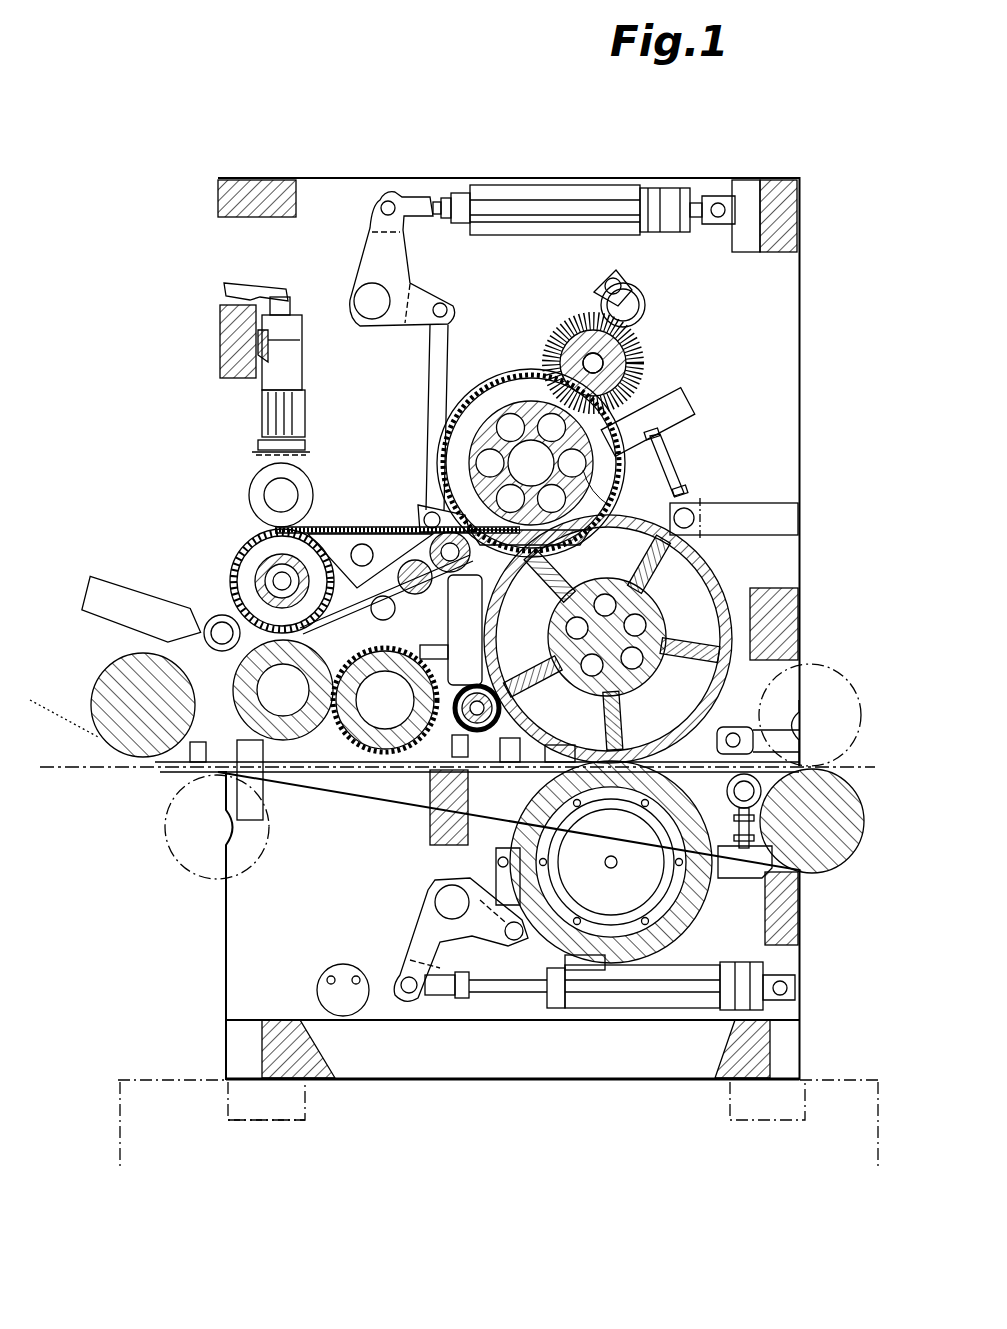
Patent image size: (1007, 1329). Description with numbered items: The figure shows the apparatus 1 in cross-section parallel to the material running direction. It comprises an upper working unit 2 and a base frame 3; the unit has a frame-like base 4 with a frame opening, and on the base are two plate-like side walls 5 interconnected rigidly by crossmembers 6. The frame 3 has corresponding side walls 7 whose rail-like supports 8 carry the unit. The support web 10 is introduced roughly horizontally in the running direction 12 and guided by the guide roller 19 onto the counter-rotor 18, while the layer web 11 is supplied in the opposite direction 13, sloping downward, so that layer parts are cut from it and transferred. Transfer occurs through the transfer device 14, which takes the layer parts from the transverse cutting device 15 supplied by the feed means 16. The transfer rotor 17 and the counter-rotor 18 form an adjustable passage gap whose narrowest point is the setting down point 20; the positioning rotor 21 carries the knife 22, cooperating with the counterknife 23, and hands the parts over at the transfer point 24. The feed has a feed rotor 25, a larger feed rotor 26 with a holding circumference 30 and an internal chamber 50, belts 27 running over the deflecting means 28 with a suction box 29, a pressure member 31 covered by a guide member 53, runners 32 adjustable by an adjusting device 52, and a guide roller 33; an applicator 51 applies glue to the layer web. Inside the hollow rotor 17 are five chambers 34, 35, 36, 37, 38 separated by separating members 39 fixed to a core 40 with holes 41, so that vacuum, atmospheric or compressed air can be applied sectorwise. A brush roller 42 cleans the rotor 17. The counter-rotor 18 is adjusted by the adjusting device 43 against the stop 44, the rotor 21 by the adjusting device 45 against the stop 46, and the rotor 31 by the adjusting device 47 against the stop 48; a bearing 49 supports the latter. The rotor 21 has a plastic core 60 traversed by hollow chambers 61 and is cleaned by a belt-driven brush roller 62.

The printing machine 1 is at (108, 92).
The upper working unit 2 is at (792, 104).
The base frame 3 is at (120, 1043).
The frame-like base 4 is at (482, 1080).
The side walls 5 is at (322, 192).
The crossmembers 6 is at (248, 192).
The side walls of frame 7 is at (178, 1090).
The supports 8 is at (222, 1106).
The support web 10 is at (848, 762).
The layer web 11 is at (62, 722).
The running direction 12 is at (100, 791).
The opposite running direction 13 is at (36, 697).
The transfer device 14 is at (798, 630).
The transverse cutting device 15 is at (690, 445).
The feed means 16 is at (175, 552).
The transfer rotor 17 is at (706, 588).
The counter-rotor 18 is at (690, 918).
The guide roller 19 is at (840, 690).
The setting down point 20 is at (612, 766).
The positioning rotor 21 is at (498, 420).
The cutting knife 22 is at (531, 463).
The counterknife 23 is at (548, 548).
The transfer point 24 is at (642, 522).
The feed rotor 25 is at (318, 748).
The feed rotor 26 is at (214, 548).
The further feed rotor 27 is at (352, 598).
The deflecting means 28 is at (456, 574).
The suction box 29 is at (350, 527).
The holding circumference 30 is at (248, 522).
The pressure member 31 is at (378, 752).
The pressure members 32 is at (250, 485).
The guide member 33 is at (112, 680).
The chamber 34 is at (618, 522).
The chamber 35 is at (752, 612).
The chamber 36 is at (688, 682).
The chamber 37 is at (600, 715).
The chamber 38 is at (484, 612).
The separating member 39 is at (650, 566).
The core 40 is at (622, 638).
The holes 41 is at (566, 636).
The brush roller 42 is at (478, 758).
The adjusting device 43 is at (512, 1040).
The stop 44 is at (760, 818).
The adjusting device 45 is at (495, 282).
The stop 46 is at (726, 480).
The adjusting device 47 is at (752, 750).
The stop 48 is at (385, 700).
The bearing 49 is at (308, 520).
The chamber 50 is at (283, 690).
The applicator 51 is at (112, 548).
The adjusting device 52 is at (303, 418).
The guide member 53 is at (415, 594).
The core 60 is at (488, 436).
The bore 61 is at (492, 462).
The brush roller 62 is at (686, 345).